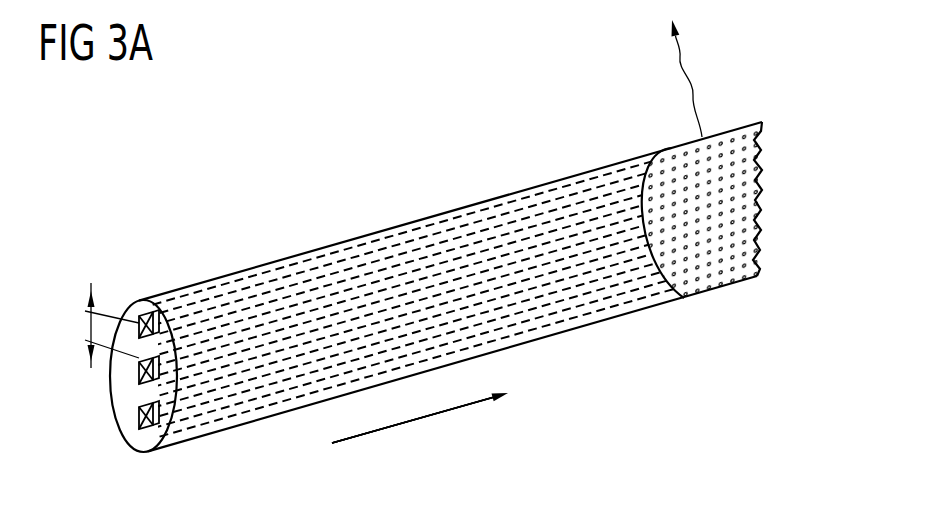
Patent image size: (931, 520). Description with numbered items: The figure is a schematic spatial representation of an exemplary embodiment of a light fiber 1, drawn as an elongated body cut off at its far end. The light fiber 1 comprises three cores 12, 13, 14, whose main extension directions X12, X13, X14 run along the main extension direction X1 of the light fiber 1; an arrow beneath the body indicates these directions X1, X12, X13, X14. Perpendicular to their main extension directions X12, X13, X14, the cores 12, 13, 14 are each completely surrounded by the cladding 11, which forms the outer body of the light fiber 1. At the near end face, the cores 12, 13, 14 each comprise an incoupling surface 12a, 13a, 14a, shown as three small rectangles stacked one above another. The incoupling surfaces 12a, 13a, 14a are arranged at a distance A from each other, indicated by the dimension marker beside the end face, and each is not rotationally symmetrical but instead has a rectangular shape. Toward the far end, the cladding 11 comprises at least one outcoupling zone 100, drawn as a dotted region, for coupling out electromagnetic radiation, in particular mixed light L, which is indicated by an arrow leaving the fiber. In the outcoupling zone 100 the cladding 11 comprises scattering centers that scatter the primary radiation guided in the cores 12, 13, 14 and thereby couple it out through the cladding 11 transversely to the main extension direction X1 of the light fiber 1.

The light fiber 1 is at (290, 224).
The cladding 11 is at (533, 197).
The core 12 is at (190, 312).
The core 13 is at (202, 360).
The core 14 is at (285, 382).
The incoupling surface 12a is at (138, 312).
The incoupling surface 13a is at (139, 378).
The incoupling surface 14a is at (139, 428).
The outcoupling zone 100 is at (712, 281).
The mixed light L is at (695, 95).
The distance A is at (87, 327).
The main extension direction of the light fiber X1 is at (417, 421).
The main extension direction of core 12 X12 is at (412, 420).
The main extension direction of core 13 X13 is at (412, 420).
The main extension direction of core 14 X14 is at (412, 420).